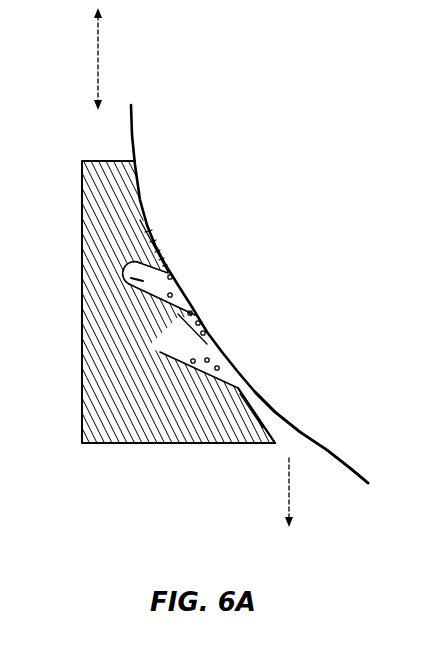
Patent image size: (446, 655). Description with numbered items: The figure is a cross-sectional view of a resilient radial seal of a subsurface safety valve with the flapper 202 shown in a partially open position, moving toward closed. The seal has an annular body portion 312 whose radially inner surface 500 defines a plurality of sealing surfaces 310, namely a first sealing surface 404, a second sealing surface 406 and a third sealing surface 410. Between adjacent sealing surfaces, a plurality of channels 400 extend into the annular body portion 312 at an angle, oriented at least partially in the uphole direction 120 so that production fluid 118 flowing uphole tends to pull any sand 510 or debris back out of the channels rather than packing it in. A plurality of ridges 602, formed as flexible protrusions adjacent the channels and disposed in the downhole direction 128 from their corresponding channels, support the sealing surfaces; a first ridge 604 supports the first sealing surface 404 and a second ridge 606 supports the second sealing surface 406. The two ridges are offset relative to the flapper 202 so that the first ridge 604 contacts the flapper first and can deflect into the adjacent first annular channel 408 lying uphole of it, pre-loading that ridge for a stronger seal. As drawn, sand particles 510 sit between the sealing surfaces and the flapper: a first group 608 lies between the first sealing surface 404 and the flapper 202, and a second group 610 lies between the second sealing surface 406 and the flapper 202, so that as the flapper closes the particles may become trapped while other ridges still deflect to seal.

The production fluid 118 is at (289, 493).
The uphole direction 120 is at (98, 88).
The downhole direction 128 is at (98, 39).
The flapper 202 is at (327, 462).
The sealing surfaces 310 is at (168, 250).
The annular body portion 312 is at (97, 408).
The channels 400 is at (140, 287).
The first sealing surface 404 is at (172, 258).
The second sealing surface 406 is at (206, 332).
The first annular channel 408 is at (134, 279).
The third sealing surface 410 is at (258, 410).
The radially inner surface 500 is at (137, 190).
The sand particles 510 is at (193, 364).
The ridges 602 is at (178, 268).
The first ridge 604 is at (127, 259).
The second ridge 606 is at (177, 318).
The first group of sand particles 608 is at (190, 281).
The second group of sand particles 610 is at (204, 310).